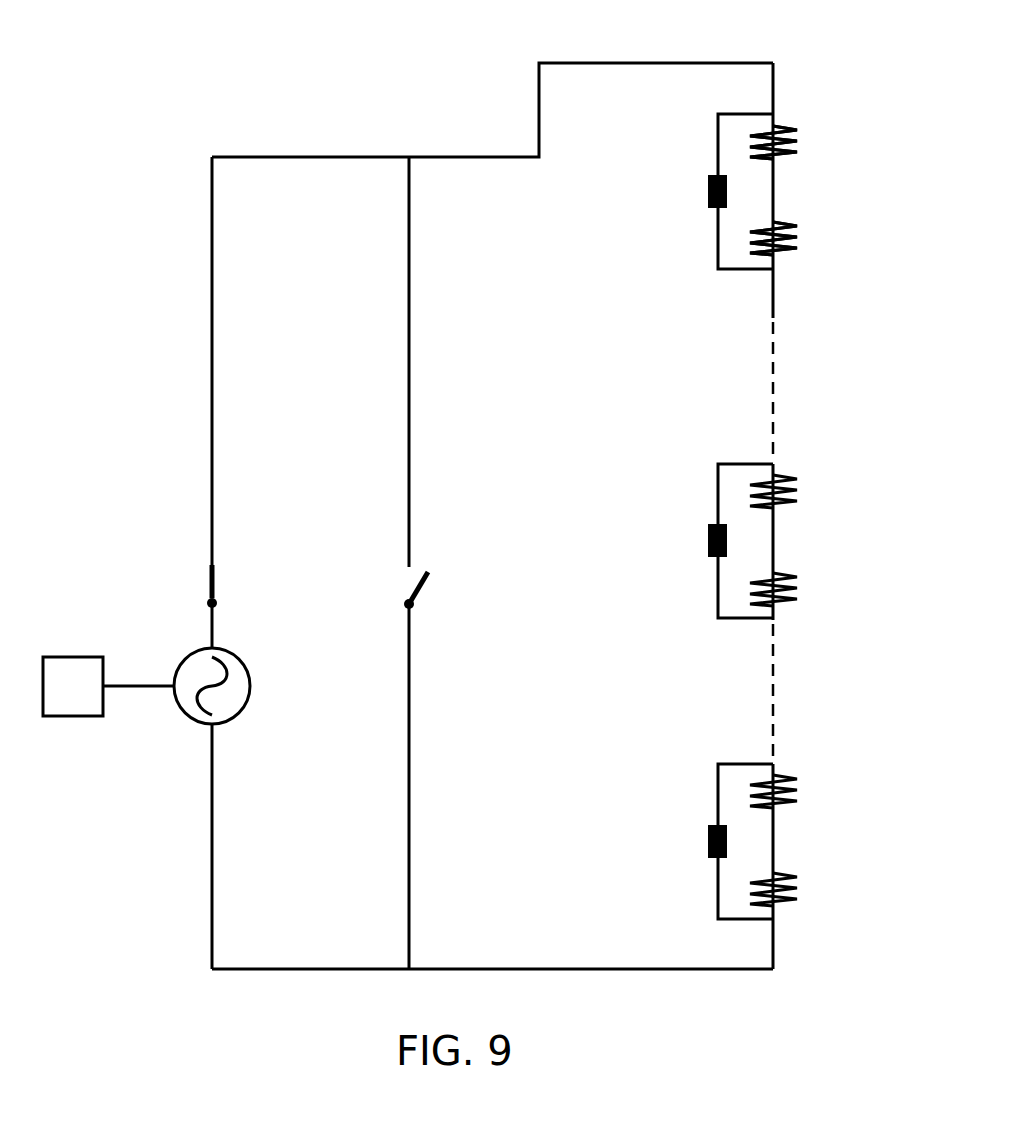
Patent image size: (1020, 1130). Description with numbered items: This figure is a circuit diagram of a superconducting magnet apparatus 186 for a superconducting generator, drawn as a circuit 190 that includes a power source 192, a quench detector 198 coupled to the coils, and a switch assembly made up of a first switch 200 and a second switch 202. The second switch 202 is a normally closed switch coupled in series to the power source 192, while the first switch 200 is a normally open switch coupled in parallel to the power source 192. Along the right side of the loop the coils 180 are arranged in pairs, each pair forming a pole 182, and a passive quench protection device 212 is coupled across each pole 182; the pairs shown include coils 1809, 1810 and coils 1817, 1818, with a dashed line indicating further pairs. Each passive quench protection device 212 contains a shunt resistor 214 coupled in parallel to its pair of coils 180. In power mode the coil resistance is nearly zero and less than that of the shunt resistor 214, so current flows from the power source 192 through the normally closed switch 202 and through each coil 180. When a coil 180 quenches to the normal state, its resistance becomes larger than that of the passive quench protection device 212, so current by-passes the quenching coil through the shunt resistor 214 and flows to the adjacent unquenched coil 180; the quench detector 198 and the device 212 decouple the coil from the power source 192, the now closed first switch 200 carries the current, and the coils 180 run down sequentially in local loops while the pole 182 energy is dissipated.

The superconducting magnet apparatus 186 is at (272, 70).
The circuit 190 is at (210, 240).
The power source 192 is at (186, 718).
The quench detector 198 is at (75, 657).
The first switch 200 is at (422, 587).
The second switch 202 is at (215, 585).
The passive quench protection device 212 is at (662, 142).
The shunt resistor 214 is at (708, 190).
The coil 180 is at (786, 128).
The pole 182 is at (826, 114).
The coil 1809 is at (782, 510).
The coil 1810 is at (782, 607).
The coil 1817 is at (782, 810).
The coil 1818 is at (782, 907).